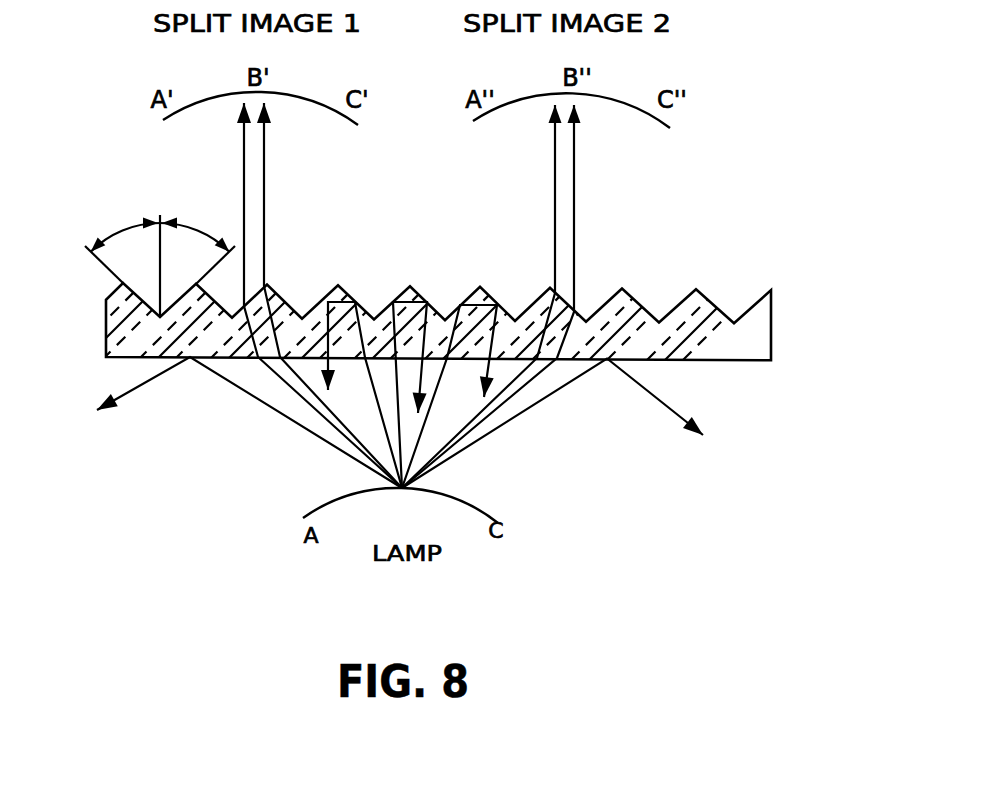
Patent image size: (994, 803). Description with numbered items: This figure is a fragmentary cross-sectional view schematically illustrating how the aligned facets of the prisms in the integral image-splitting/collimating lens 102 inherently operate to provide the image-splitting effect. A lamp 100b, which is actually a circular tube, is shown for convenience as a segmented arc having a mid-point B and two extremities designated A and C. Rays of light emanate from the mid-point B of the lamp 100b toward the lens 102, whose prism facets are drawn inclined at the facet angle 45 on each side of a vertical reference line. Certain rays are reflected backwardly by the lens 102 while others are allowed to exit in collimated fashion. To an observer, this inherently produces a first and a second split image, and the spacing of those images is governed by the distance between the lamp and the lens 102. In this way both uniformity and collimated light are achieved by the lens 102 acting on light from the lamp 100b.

The integral image-splitting/collimating lens 102 is at (107, 307).
The lamp 100b is at (475, 503).
The 45 degree prism facet angle 45 is at (160, 259).
The mid-point of lamp arc B is at (400, 311).